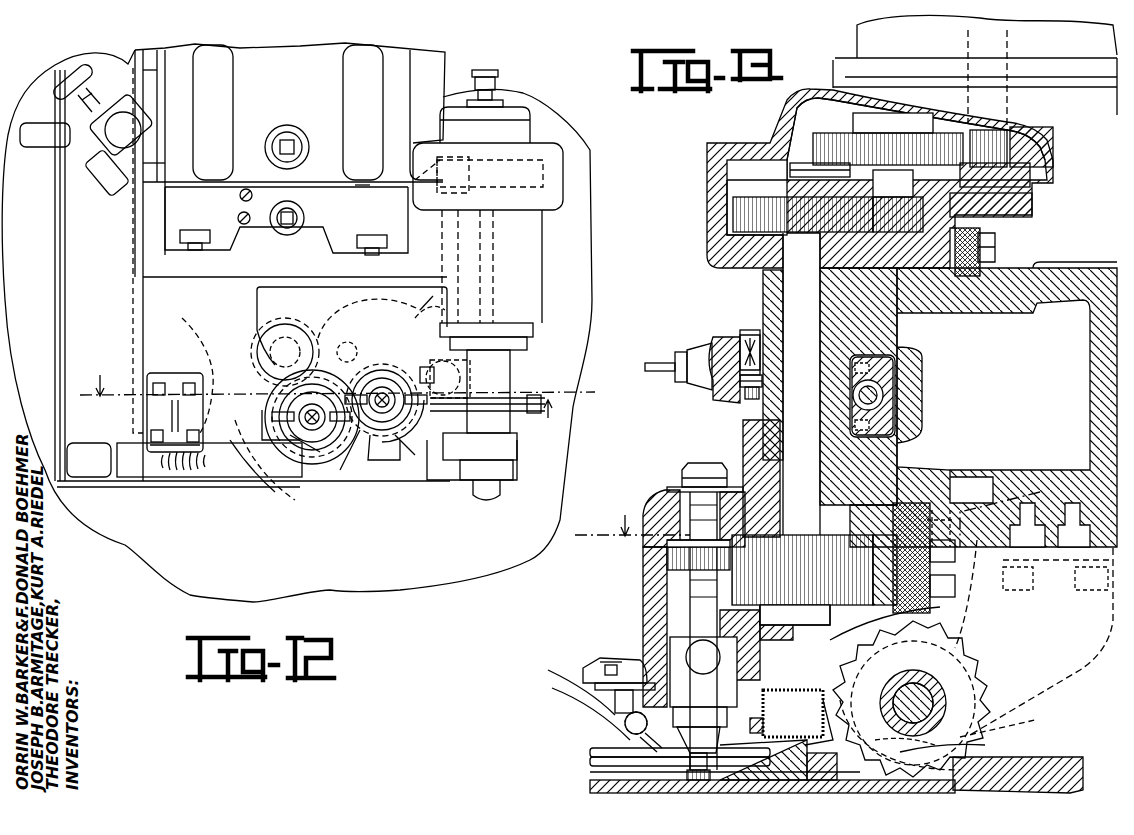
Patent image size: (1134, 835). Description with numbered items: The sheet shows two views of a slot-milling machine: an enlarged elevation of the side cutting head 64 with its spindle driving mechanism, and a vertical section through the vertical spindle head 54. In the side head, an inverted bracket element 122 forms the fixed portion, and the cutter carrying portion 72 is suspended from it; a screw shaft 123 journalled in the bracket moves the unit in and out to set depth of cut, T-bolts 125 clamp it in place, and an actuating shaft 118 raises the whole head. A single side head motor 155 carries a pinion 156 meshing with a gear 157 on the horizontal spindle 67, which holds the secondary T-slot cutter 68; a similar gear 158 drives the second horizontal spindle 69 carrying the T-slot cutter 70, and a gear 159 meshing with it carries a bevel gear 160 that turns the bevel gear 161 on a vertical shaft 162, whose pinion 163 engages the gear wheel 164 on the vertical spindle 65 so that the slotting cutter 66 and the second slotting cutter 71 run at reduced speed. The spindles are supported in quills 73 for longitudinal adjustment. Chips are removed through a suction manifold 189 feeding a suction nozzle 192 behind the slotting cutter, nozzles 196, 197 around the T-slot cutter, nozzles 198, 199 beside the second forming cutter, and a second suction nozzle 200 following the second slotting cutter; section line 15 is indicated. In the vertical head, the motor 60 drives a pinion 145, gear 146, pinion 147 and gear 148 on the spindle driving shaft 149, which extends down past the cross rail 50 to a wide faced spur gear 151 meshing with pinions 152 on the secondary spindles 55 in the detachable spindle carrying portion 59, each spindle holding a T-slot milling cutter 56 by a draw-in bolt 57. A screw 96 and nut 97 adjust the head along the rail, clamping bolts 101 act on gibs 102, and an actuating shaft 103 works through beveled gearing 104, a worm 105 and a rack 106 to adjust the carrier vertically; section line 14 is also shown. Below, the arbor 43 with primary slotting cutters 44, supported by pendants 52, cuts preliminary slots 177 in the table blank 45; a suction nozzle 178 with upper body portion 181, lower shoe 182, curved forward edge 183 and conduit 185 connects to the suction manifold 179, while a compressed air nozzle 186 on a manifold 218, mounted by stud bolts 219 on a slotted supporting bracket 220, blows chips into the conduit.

In FIG. 12, the inverted bracket element 122 is at (224, 62).
In FIG. 12, the actuating shaft 118 is at (286, 140).
In FIG. 12, the screw shaft 123 is at (280, 228).
In FIG. 12, the T-bolts 125 is at (205, 248).
In FIG. 12, the pinion 163 is at (400, 192).
In FIG. 12, the side cutting head 64 is at (130, 220).
In FIG. 12, the cutter carrying portion 72 is at (175, 264).
In FIG. 12, the vertical shaft 162 is at (450, 225).
In FIG. 12, the gear wheel 164 is at (540, 168).
In FIG. 12, the bevel gear 161 is at (492, 318).
In FIG. 12, the second horizontal spindle 69 is at (372, 318).
In FIG. 12, the pinion 156 is at (280, 322).
In FIG. 12, the gear 157 is at (330, 340).
In FIG. 12, the side head motor 155 is at (182, 320).
In FIG. 12, the T-slot cutter 70 is at (384, 432).
In FIG. 12, the secondary T-slot cutter 68 is at (322, 450).
In FIG. 12, the second slotting cutter 71 is at (530, 398).
In FIG. 12, the suction nozzle 199 is at (347, 348).
In FIG. 12, the gear 158 is at (416, 316).
In FIG. 12, the gear 159 is at (411, 299).
In FIG. 12, the section line 15 is at (330, 410).
In FIG. 12, the suction manifold 189 is at (163, 478).
In FIG. 12, the suction nozzle 197 is at (240, 470).
In FIG. 12, the horizontal spindle 67 is at (292, 470).
In FIG. 12, the quills 73 is at (305, 445).
In FIG. 12, the suction nozzle 196 is at (360, 450).
In FIG. 12, the suction nozzle 198 is at (410, 455).
In FIG. 12, the suction nozzle 192 is at (462, 480).
In FIG. 12, the vertical spindle 65 is at (512, 350).
In FIG. 12, the second suction nozzle 200 is at (470, 372).
In FIG. 12, the bevel gear 160 is at (500, 365).
In FIG. 12, the slotting cutter 66 is at (535, 415).
In FIG. 13, the motor 60 is at (875, 40).
In FIG. 13, the vertical spindle head 54 is at (705, 172).
In FIG. 13, the gear 146 is at (882, 133).
In FIG. 13, the pinion 145 is at (985, 130).
In FIG. 13, the gear 148 is at (740, 205).
In FIG. 13, the pinion 147 is at (893, 210).
In FIG. 13, the spindle driving shaft 149 is at (770, 262).
In FIG. 13, the cross rail 50 is at (1052, 270).
In FIG. 13, the clamping bolts 101 is at (997, 245).
In FIG. 13, the gibs 102 is at (945, 290).
In FIG. 13, the nut 97 is at (885, 380).
In FIG. 13, the screw 96 is at (880, 395).
In FIG. 13, the section line 14 is at (816, 512).
In FIG. 13, the beveled gearing 104 is at (742, 335).
In FIG. 13, the actuating shaft 103 is at (672, 362).
In FIG. 13, the worm 105 is at (738, 395).
In FIG. 13, the rack 106 is at (752, 405).
In FIG. 13, the spindle carrying portion 59 is at (648, 512).
In FIG. 13, the draw-in bolt 57 is at (680, 470).
In FIG. 13, the pinions 152 is at (675, 555).
In FIG. 13, the wide faced spur gear 151 is at (814, 580).
In FIG. 13, the conduit 185 is at (745, 752).
In FIG. 13, the upper forward body portion 181 is at (793, 713).
In FIG. 13, the suction nozzle 178 is at (820, 745).
In FIG. 13, the preliminary rectangular slot 177 is at (870, 775).
In FIG. 13, the machine tool table blank 45 is at (1070, 757).
In FIG. 13, the arbor 43 is at (930, 690).
In FIG. 13, the suction manifold 179 is at (875, 672).
In FIG. 13, the lower portion 182 is at (862, 700).
In FIG. 13, the upwardly curved forward edge 183 is at (985, 746).
In FIG. 13, the primary slotting cutters 44 is at (1005, 719).
In FIG. 13, the supporting pendants 52 is at (1090, 655).
In FIG. 13, the stud bolts 219 is at (612, 665).
In FIG. 13, the compressed air blowing nozzle 186 is at (625, 720).
In FIG. 13, the slotted supporting bracket 220 is at (563, 688).
In FIG. 13, the manifold 218 is at (574, 710).
In FIG. 13, the secondary spindles 55 is at (590, 750).
In FIG. 13, the secondary T-slot milling cutter 56 is at (590, 762).